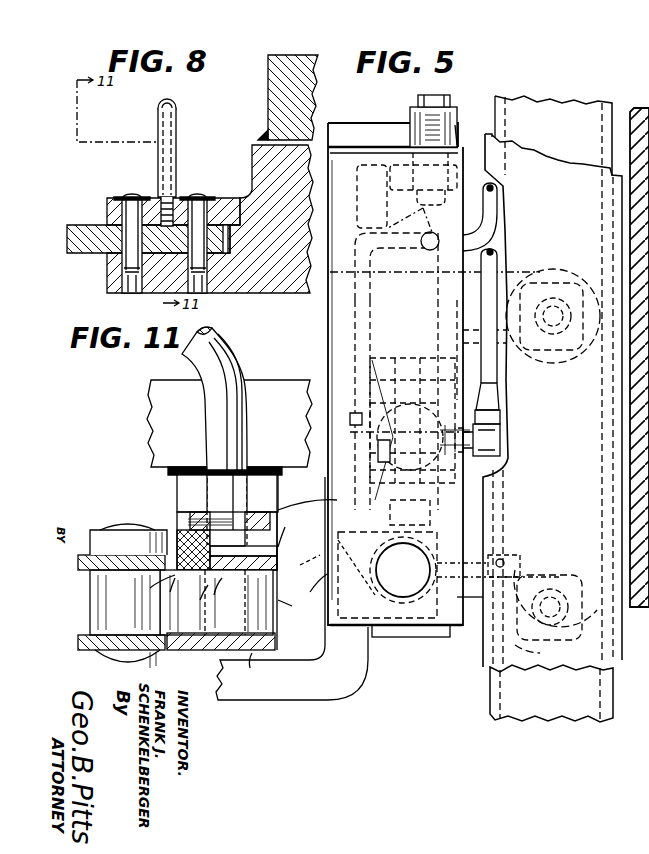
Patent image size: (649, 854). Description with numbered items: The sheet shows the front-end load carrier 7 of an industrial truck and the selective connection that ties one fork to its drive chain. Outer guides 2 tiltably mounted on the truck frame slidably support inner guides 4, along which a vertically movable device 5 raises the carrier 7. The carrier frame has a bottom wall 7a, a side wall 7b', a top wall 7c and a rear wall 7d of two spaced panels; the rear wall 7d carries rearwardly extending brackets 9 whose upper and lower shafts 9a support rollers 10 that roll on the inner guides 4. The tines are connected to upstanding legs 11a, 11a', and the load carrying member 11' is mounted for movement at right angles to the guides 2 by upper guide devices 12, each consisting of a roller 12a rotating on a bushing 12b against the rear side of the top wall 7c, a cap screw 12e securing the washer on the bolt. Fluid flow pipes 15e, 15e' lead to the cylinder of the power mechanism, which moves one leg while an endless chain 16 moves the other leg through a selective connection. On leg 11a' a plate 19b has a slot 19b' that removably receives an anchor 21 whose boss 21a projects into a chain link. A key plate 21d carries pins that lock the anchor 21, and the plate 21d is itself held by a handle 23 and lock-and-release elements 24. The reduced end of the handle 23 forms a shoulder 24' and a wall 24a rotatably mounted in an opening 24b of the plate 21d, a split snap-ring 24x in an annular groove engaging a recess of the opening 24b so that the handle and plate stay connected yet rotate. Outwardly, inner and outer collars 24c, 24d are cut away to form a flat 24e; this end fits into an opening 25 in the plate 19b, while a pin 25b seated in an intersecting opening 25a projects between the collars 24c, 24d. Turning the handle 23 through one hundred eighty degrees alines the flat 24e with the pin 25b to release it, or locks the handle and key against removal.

In FIG. 5, the outer guides 2 is at (613, 655).
In FIG. 5, the inner guides 4 is at (592, 700).
In FIG. 5, the vertically movable device 5 is at (449, 560).
In FIG. 11, the load carrier 7 is at (310, 540).
In FIG. 5, the load carrier 7 is at (434, 374).
In FIG. 5, the bottom wall 7a is at (400, 632).
In FIG. 5, the side wall 7b' is at (314, 380).
In FIG. 5, the top wall 7c is at (358, 135).
In FIG. 5, the rear wall 7d is at (438, 292).
In FIG. 5, the brackets 9 is at (585, 244).
In FIG. 5, the shafts 9a is at (553, 350).
In FIG. 5, the rollers 10 is at (572, 566).
In FIG. 11, the load carrying member 11' is at (292, 599).
In FIG. 11, the upstanding leg 11a is at (307, 586).
In FIG. 8, the upstanding leg 11a' is at (269, 97).
In FIG. 11, the upstanding leg 11a' is at (206, 427).
In FIG. 5, the upper guide devices 12 is at (546, 400).
In FIG. 5, the roller 12a is at (456, 128).
In FIG. 5, the bushing 12b is at (406, 118).
In FIG. 5, the cap screw 12e is at (437, 96).
In FIG. 5, the fluid flow pipe 15e is at (505, 217).
In FIG. 5, the fluid flow pipe 15e' is at (504, 349).
In FIG. 11, the chain 16 is at (93, 534).
In FIG. 8, the plate 19b is at (185, 216).
In FIG. 11, the plate 19b is at (221, 657).
In FIG. 8, the slot 19b' is at (155, 199).
In FIG. 11, the slot 19b' is at (253, 668).
In FIG. 8, the anchor 21 is at (105, 250).
In FIG. 11, the anchor 21 is at (268, 628).
In FIG. 11, the boss 21a is at (95, 605).
In FIG. 8, the plate 21d is at (170, 209).
In FIG. 11, the plate 21d is at (317, 497).
In FIG. 5, the plate 21d is at (400, 441).
In FIG. 8, the handle 23 is at (164, 226).
In FIG. 11, the handle 23 is at (215, 370).
In FIG. 8, the lock-and-release elements 24 is at (183, 162).
In FIG. 11, the lock-and-release elements 24 is at (291, 562).
In FIG. 11, the shoulder 24' is at (262, 478).
In FIG. 11, the wall 24a is at (210, 470).
In FIG. 11, the opening 24b is at (187, 515).
In FIG. 11, the inner collar 24c is at (185, 583).
In FIG. 11, the outer collar 24d is at (230, 586).
In FIG. 11, the flat 24e is at (196, 598).
In FIG. 11, the split snap-ring 24x is at (151, 587).
In FIG. 11, the opening 25 is at (294, 606).
In FIG. 11, the opening 25a is at (301, 560).
In FIG. 11, the pin 25b is at (292, 529).